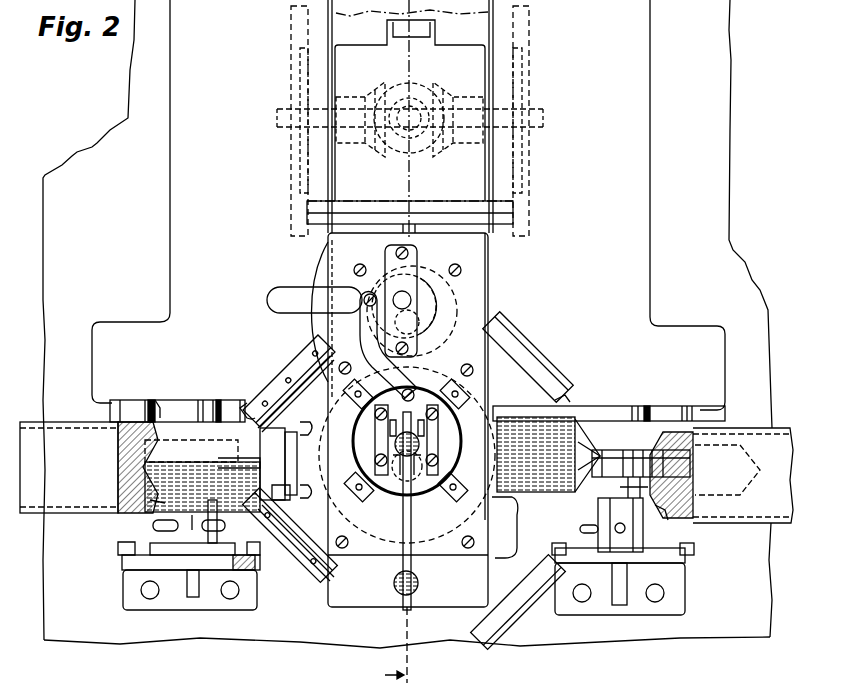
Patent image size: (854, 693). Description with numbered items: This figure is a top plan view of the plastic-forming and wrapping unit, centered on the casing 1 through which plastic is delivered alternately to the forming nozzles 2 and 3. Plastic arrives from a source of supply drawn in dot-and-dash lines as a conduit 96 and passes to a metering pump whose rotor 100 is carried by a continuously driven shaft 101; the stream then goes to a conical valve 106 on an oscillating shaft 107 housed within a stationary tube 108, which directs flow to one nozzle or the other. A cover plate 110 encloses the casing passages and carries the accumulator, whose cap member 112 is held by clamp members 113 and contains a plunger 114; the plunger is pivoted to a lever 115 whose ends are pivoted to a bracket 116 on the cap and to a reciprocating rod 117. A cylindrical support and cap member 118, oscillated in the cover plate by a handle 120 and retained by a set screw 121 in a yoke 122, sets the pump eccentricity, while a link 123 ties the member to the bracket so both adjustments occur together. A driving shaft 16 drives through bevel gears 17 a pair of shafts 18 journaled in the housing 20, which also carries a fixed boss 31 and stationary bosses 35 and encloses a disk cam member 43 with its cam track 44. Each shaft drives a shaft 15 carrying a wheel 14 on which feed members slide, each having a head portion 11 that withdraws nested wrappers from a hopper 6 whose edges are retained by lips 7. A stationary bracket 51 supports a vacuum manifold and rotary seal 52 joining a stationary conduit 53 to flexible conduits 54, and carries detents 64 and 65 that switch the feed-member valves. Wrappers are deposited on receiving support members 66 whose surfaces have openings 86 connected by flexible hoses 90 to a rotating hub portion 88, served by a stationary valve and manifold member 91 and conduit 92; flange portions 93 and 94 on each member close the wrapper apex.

The casing 1 is at (437, 608).
The forming nozzle 2 is at (492, 464).
The forming nozzle 3 is at (353, 470).
The hopper 6 is at (33, 425).
The retaining lip 7 is at (152, 410).
The head portion 11 is at (118, 448).
The wheel 14 is at (625, 448).
The shaft 15 is at (637, 495).
The driving shaft 16 is at (415, 160).
The bevel gears 17 is at (420, 100).
The shaft 18 is at (283, 109).
The housing 20 is at (188, 188).
The fixed boss 31 is at (165, 402).
The stationary boss 35 is at (110, 410).
The disk cam member 43 is at (291, 32).
The cam track 44 is at (300, 55).
The stationary bracket 51 is at (133, 573).
The vacuum manifold and rotary seal 52 is at (170, 540).
The stationary conduit 53 is at (187, 600).
The flexible conduit 54 is at (153, 524).
The detent 64 is at (118, 550).
The detent 65 is at (265, 558).
The receiving support member 66 is at (525, 336).
The opening 86 is at (320, 362).
The rotating hub portion 88 is at (283, 495).
The flexible hose 90 is at (305, 428).
The stationary valve and manifold member 91 is at (268, 452).
The conduit 92 is at (225, 462).
The leading flange portion 93 is at (562, 398).
The trailing flange portion 94 is at (245, 400).
The conduit 96 is at (390, 201).
The rotor 100 is at (458, 296).
The rotor shaft 101 is at (420, 325).
The conical valve 106 is at (360, 552).
The oscillating shaft 107 is at (418, 485).
The stationary tube 108 is at (390, 482).
The cover plate 110 is at (476, 278).
The cap member 112 is at (370, 446).
The clamp member 113 is at (350, 398).
The plunger 114 is at (442, 436).
The lever 115 is at (411, 529).
The bracket 116 is at (414, 390).
The reciprocating rod 117 is at (396, 588).
The cylindrical support and cap member 118 is at (382, 270).
The handle 120 is at (290, 289).
The set screw 121 is at (412, 302).
The yoke 122 is at (415, 258).
The link 123 is at (360, 342).